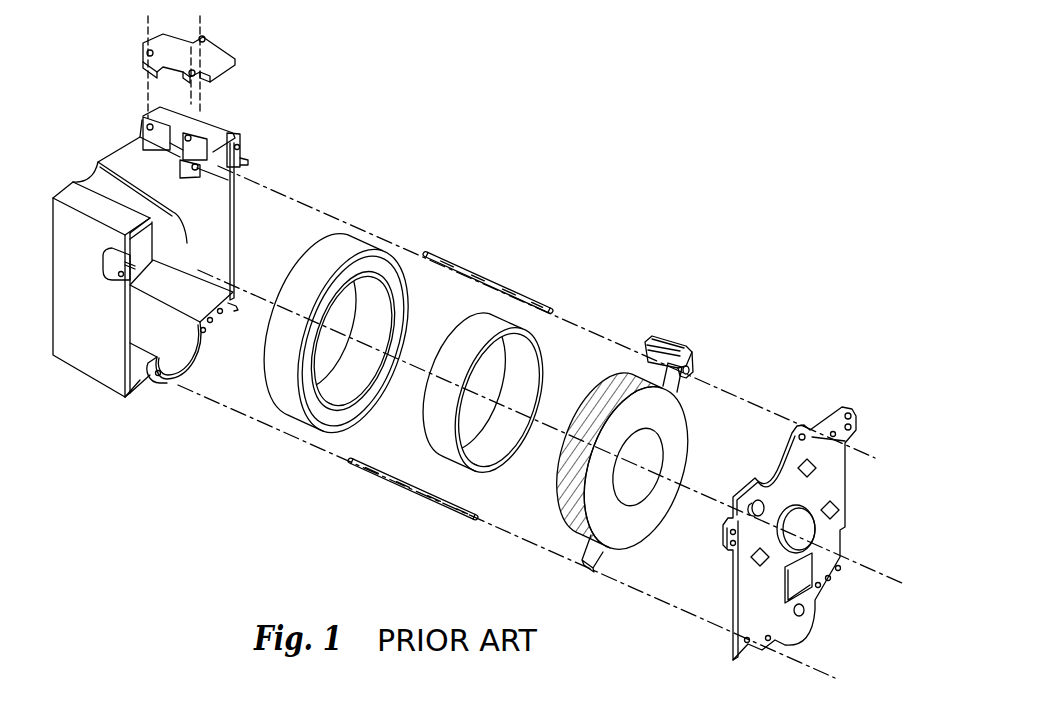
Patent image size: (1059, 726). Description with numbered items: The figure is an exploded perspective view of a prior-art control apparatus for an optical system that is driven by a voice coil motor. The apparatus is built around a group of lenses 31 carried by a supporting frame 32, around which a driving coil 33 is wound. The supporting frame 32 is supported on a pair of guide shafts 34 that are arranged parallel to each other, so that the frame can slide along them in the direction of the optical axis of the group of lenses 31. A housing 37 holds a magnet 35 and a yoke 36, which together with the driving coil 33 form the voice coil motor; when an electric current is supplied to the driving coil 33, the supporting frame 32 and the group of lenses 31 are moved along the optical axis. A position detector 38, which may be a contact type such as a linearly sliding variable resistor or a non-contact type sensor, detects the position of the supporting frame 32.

The group of lenses 31 is at (646, 484).
The supporting frame 32 is at (676, 427).
The driving coil 33 is at (571, 517).
The guide shaft 34 is at (523, 292).
The magnet 35 is at (545, 353).
The yoke 36 is at (277, 407).
The housing 37 is at (100, 373).
The position detector 38 is at (668, 337).